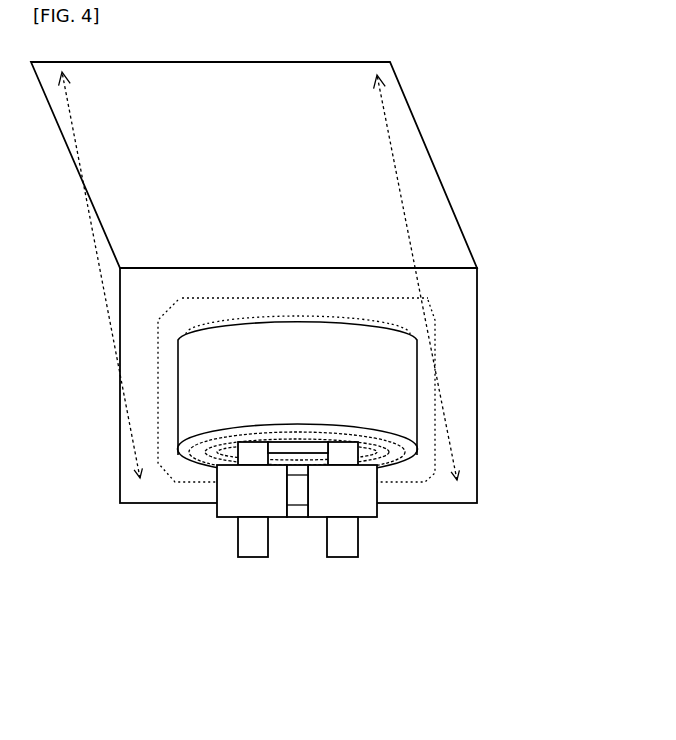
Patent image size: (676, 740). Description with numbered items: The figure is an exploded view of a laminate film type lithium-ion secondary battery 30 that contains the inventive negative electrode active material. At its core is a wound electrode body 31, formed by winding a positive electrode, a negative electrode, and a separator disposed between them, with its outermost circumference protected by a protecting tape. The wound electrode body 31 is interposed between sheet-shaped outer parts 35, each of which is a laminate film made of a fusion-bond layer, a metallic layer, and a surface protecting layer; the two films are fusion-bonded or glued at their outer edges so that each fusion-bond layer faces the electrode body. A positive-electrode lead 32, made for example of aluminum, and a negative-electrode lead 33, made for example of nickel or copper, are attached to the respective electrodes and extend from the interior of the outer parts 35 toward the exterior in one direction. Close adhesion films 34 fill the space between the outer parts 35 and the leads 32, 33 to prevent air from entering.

The lithium-ion secondary battery 30 is at (428, 78).
The wound electrode body 31 is at (378, 375).
The positive-electrode lead 32 is at (248, 542).
The negative-electrode lead 33 is at (340, 542).
The close adhesion film 34 is at (363, 493).
The outer part 35 is at (315, 172).